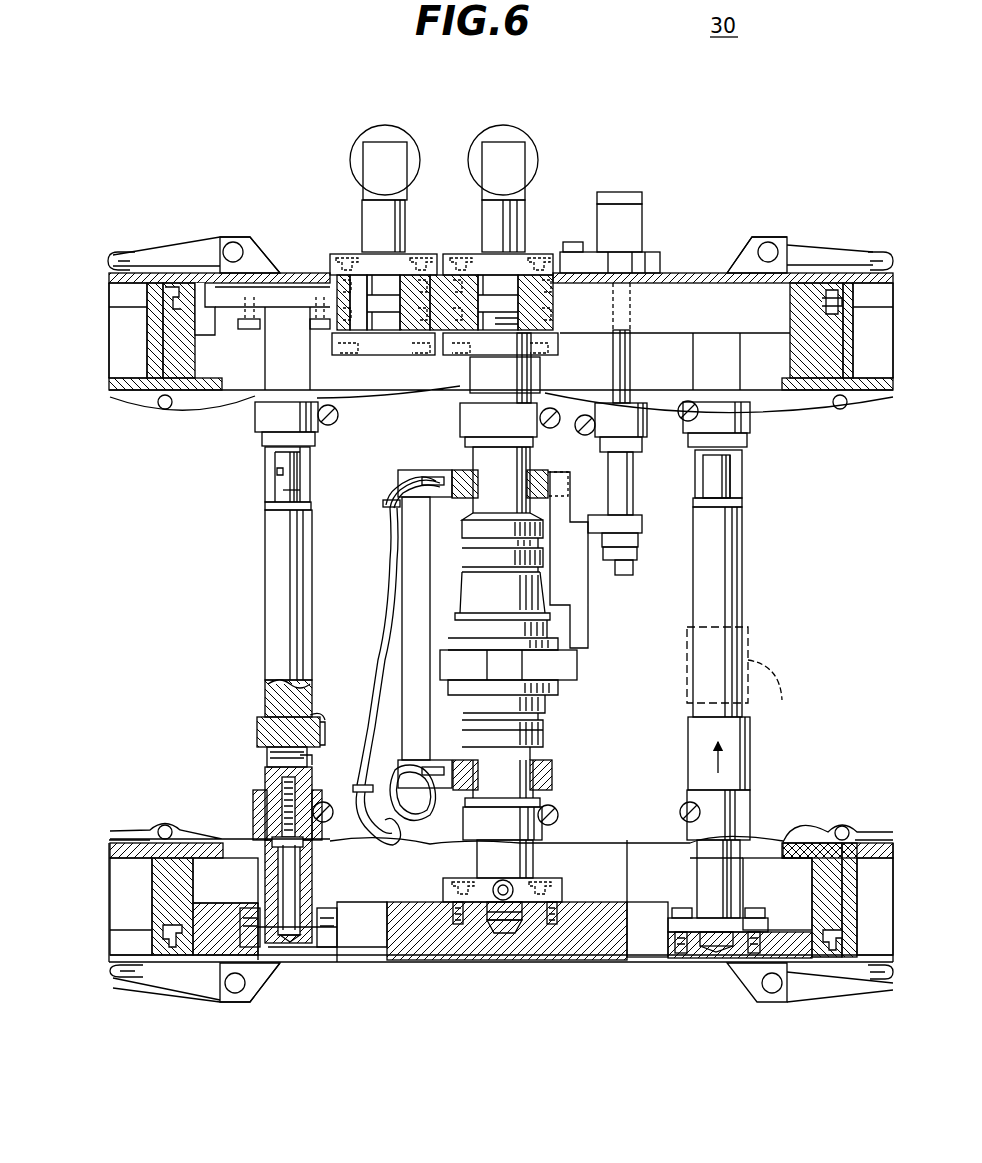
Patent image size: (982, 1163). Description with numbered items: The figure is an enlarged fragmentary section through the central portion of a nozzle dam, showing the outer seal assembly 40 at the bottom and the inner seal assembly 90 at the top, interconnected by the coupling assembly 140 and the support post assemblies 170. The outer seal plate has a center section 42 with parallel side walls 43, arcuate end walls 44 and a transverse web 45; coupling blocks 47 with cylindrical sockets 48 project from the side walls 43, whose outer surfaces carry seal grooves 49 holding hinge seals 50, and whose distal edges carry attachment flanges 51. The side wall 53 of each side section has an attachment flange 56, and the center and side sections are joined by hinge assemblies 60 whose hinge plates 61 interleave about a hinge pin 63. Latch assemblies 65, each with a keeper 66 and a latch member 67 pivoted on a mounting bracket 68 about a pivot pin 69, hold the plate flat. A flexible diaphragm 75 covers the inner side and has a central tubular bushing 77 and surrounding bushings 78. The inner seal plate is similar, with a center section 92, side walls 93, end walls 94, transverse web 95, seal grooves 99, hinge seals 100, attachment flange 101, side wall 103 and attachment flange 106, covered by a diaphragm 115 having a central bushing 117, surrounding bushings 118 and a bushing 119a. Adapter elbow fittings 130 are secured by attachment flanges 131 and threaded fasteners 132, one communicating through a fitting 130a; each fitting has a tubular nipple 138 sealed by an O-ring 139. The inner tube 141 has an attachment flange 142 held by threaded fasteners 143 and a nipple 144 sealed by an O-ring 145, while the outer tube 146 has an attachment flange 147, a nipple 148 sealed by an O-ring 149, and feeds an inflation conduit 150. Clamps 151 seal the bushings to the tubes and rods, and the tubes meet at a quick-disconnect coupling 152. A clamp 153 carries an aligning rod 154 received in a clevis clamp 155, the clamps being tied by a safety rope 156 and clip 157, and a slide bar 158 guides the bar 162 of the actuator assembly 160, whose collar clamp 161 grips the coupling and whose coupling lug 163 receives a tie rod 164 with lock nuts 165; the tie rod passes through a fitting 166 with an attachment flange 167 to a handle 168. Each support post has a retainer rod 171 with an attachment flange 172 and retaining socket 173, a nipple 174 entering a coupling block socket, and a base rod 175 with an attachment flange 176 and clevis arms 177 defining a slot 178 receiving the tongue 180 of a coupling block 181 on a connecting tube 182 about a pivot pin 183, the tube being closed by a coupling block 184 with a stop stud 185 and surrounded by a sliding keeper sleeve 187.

The outer seal assembly 40 is at (425, 1038).
The center section 42 is at (640, 962).
The side walls 43 is at (822, 891).
The arcuate end walls 44 is at (662, 878).
The transverse web 45 is at (412, 960).
The coupling blocks 47 is at (212, 938).
The cylindrical socket 48 is at (310, 962).
The seal grooves 49 is at (175, 945).
The hinge seals 50 is at (160, 945).
The attachment flange 51 is at (788, 858).
The side wall 53 is at (835, 920).
The attachment flange 56 is at (127, 858).
The hinge assemblies 60 is at (838, 828).
The hinge plates 61 is at (812, 838).
The hinge pin 63 is at (838, 410).
The latch assemblies 65 is at (785, 235).
The keeper 66 is at (122, 252).
The latch member 67 is at (180, 246).
The mounting bracket 68 is at (262, 250).
The pivot pin 69 is at (232, 243).
The diaphragm 75 is at (140, 831).
The central tubular bushing 77 is at (548, 800).
The surrounding bushings 78 is at (255, 803).
The inner seal assembly 90 is at (272, 178).
The center section 92 is at (700, 272).
The side walls 93 is at (820, 356).
The arcuate end walls 94 is at (396, 380).
The transverse web 95 is at (746, 325).
The seal grooves 99 is at (232, 312).
The hinge seals 100 is at (832, 290).
The attachment flange 101 is at (800, 392).
The side wall 103 is at (866, 392).
The attachment flange 106 is at (126, 392).
The diaphragm 115 is at (190, 392).
The central tubular bushing 117 is at (465, 441).
The surrounding bushings 118 is at (262, 442).
The bushing 119a is at (632, 455).
The adapter elbow fittings 130 is at (477, 178).
The fitting 130a is at (377, 361).
The attachment flange 131 is at (446, 254).
The threaded fasteners 132 is at (548, 290).
The tubular nipple 138 is at (368, 292).
The O-ring 139 is at (380, 283).
The coupling assembly 140 is at (575, 700).
The inner tube 141 is at (531, 377).
The attachment flange 142 is at (470, 366).
The threaded fasteners 143 is at (540, 330).
The reduced-diameter nipple 144 is at (528, 300).
The O-ring 145 is at (500, 326).
The outer tube 146 is at (533, 860).
The attachment flange 147 is at (562, 890).
The reduced-diameter nipple 148 is at (492, 925).
The O-ring 149 is at (508, 918).
The inflation conduit 150 is at (492, 888).
The clamps 151 is at (478, 415).
The quick-disconnect coupling 152 is at (458, 592).
The clamp 153 is at (415, 468).
The aligning rod 154 is at (418, 550).
The clevis clamp 155 is at (553, 770).
The safety rope 156 is at (378, 668).
The clip 157 is at (428, 800).
The slide bar 158 is at (575, 488).
The actuator assembly 160 is at (665, 196).
The collar clamp 161 is at (562, 670).
The bar 162 is at (580, 615).
The coupling lug 163 is at (640, 518).
The tie rod 164 is at (631, 366).
The lock nuts 165 is at (640, 565).
The fitting 166 is at (598, 216).
The attachment flange 167 is at (650, 252).
The handle 168 is at (623, 192).
The support post assemblies 170 is at (245, 569).
The retainer rod 171 is at (263, 400).
The attachment flange 172 is at (278, 330).
The retaining socket 173 is at (272, 473).
The reduced-diameter nipple 174 is at (696, 935).
The base rod 175 is at (312, 878).
The attachment flange 176 is at (337, 923).
The clevis arms 177 is at (318, 736).
The slot 178 is at (310, 756).
The tongue 180 is at (272, 738).
The coupling block 181 is at (290, 703).
The connecting tube 182 is at (265, 631).
The pivot pin 183 is at (270, 755).
The coupling block 184 is at (305, 510).
The stop stud 185 is at (283, 493).
The keeper sleeve 187 is at (318, 714).